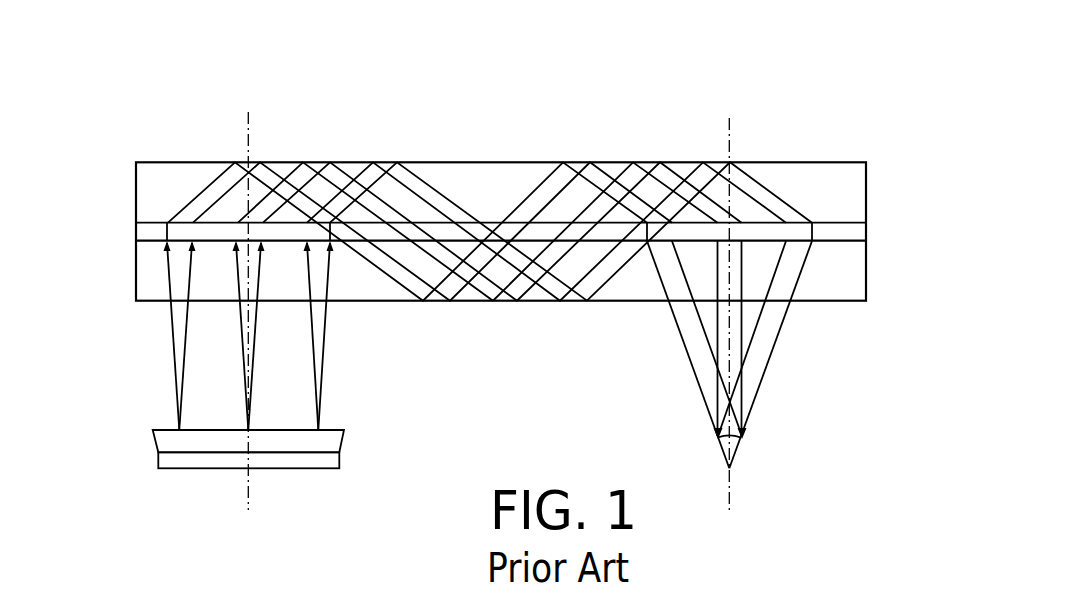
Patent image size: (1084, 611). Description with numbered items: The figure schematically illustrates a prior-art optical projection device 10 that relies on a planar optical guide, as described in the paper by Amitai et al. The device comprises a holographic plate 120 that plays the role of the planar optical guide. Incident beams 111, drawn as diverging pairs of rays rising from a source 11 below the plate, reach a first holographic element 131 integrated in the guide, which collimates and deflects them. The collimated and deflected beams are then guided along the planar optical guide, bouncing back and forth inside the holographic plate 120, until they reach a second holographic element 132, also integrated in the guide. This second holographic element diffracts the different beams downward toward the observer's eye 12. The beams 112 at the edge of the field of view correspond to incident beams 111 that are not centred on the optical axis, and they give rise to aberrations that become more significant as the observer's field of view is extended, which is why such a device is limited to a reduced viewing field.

The projection device 10 is at (455, 165).
The light source / image source 11 is at (340, 459).
The incident beams 111 is at (320, 342).
The observer's eye 12 is at (740, 449).
The beams at the edge of the field of view 112 is at (758, 363).
The holographic plate 120 is at (488, 178).
The first holographic element 131 is at (173, 233).
The second holographic element 132 is at (794, 223).